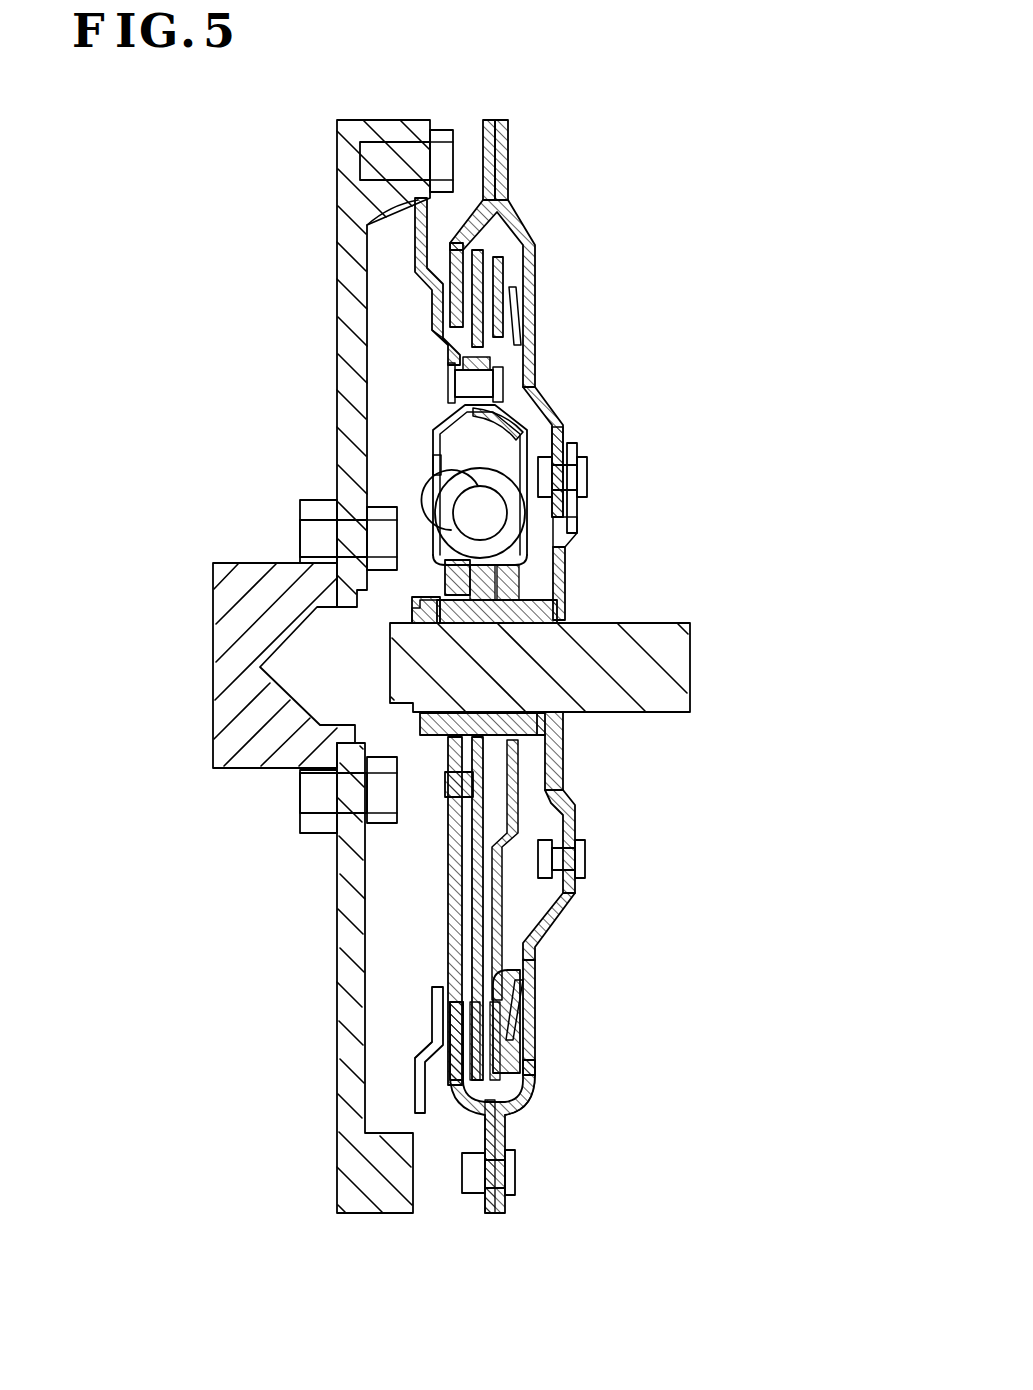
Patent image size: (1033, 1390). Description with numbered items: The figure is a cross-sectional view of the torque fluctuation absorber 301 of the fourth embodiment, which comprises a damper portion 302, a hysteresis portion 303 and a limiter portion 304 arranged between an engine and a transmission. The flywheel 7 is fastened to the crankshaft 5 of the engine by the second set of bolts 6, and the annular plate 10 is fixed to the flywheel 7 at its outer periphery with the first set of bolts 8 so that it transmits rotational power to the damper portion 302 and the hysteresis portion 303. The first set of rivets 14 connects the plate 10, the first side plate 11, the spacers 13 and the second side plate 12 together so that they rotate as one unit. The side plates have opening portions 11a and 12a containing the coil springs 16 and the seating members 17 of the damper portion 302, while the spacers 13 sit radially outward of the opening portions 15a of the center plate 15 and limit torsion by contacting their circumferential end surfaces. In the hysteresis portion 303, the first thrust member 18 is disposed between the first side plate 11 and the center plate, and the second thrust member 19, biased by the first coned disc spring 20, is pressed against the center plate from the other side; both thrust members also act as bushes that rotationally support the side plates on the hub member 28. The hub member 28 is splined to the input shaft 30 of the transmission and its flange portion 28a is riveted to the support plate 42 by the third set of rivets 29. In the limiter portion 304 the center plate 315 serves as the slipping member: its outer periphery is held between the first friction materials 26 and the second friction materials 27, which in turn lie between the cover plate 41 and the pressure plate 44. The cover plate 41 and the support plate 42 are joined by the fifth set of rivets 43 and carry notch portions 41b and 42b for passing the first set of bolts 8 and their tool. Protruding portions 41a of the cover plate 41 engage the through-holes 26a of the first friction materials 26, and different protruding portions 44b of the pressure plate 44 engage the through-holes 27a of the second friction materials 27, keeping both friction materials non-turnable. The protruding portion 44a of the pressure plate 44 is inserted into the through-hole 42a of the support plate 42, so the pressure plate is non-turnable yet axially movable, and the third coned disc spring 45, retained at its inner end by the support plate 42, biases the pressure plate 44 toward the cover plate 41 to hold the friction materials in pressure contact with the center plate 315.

The crankshaft 5 is at (240, 568).
The second set of bolts 6 is at (310, 540).
The flywheel 7 is at (350, 265).
The first set of bolts 8 is at (372, 158).
The plate 10 is at (417, 223).
The first side plate 11 is at (438, 440).
The opening portions 11a is at (440, 455).
The second side plate 12 is at (540, 395).
The opening portions 12a is at (560, 435).
The spacers 13 is at (455, 383).
The first set of rivets 14 is at (480, 365).
The center plate 15 is at (440, 353).
The opening portions 15a is at (445, 575).
The coil springs 16 is at (517, 516).
The seating members 17 is at (440, 468).
The first thrust member 18 is at (430, 603).
The second thrust member 19 is at (560, 605).
The first coned disc spring 20 is at (567, 560).
The first friction materials 26 is at (460, 307).
The through-holes 26a is at (462, 1055).
The second friction materials 27 is at (510, 312).
The through-holes 27a is at (537, 1093).
The hub member 28 is at (450, 615).
The flange portion 28a is at (590, 503).
The third set of rivets 29 is at (567, 475).
The input shaft 30 is at (665, 707).
The cover plate 41 is at (420, 275).
The protruding portions 41a is at (437, 1015).
The notch portions 41b is at (490, 122).
The support plate 42 is at (552, 229).
The through-hole 42a is at (532, 990).
The notch portions 42b is at (505, 160).
The fifth set of rivets 43 is at (500, 1175).
The pressure plate 44 is at (478, 280).
The protruding portion 44a is at (520, 975).
The different protruding portions 44b is at (505, 1045).
The third coned disc spring 45 is at (512, 300).
The torque fluctuation absorber 301 is at (758, 226).
The damper portion 302 is at (590, 512).
The hysteresis portion 303 is at (579, 585).
The limiter portion 304 is at (579, 307).
The center plate 315 is at (477, 902).